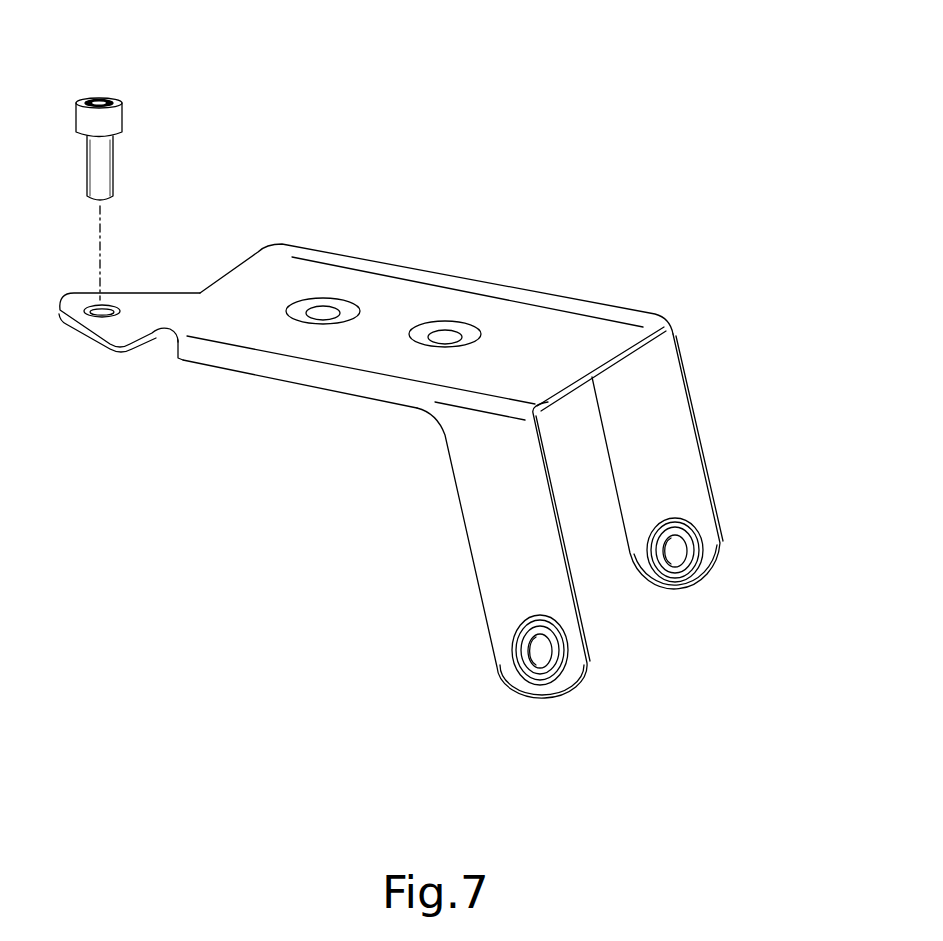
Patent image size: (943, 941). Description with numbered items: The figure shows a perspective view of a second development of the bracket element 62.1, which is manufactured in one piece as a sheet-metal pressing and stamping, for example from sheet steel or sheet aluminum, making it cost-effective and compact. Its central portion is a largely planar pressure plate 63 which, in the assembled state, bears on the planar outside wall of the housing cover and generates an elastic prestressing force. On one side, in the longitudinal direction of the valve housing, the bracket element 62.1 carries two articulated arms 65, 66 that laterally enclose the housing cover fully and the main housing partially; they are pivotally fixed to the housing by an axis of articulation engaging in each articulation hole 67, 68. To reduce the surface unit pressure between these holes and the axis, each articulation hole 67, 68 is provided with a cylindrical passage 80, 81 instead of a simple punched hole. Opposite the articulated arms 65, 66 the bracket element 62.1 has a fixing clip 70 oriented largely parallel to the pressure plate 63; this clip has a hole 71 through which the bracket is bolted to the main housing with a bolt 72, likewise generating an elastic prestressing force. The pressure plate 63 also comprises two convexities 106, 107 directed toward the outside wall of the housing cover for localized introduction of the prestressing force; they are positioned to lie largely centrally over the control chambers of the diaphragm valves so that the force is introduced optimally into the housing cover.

The bracket element 62.1 is at (499, 196).
The pressure plate 63 is at (382, 322).
The articulated arm 65 is at (507, 520).
The articulated arm 66 is at (655, 428).
The articulation hole 67 is at (547, 647).
The articulation hole 68 is at (678, 553).
The fixing clip 70 is at (143, 310).
The hole 71 is at (104, 307).
The bolt 72 is at (103, 100).
The cylindrical passage 80 is at (528, 654).
The cylindrical passage 81 is at (683, 600).
The convexity 106 is at (323, 312).
The convexity 107 is at (445, 337).